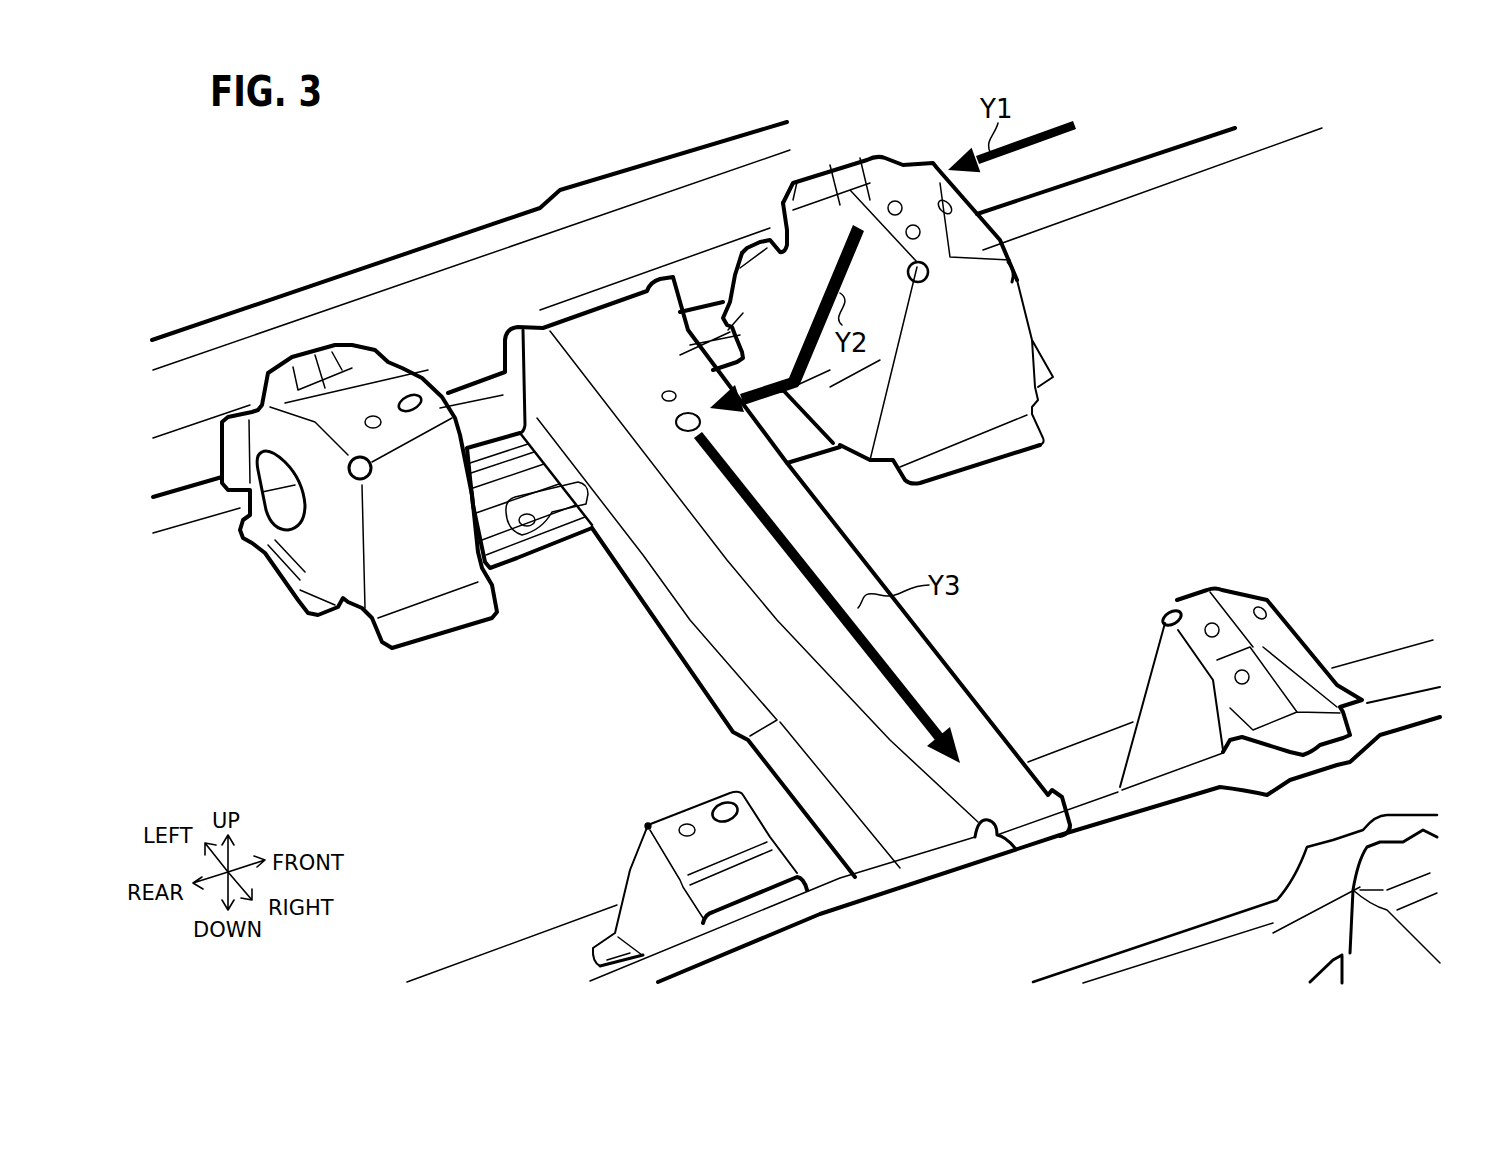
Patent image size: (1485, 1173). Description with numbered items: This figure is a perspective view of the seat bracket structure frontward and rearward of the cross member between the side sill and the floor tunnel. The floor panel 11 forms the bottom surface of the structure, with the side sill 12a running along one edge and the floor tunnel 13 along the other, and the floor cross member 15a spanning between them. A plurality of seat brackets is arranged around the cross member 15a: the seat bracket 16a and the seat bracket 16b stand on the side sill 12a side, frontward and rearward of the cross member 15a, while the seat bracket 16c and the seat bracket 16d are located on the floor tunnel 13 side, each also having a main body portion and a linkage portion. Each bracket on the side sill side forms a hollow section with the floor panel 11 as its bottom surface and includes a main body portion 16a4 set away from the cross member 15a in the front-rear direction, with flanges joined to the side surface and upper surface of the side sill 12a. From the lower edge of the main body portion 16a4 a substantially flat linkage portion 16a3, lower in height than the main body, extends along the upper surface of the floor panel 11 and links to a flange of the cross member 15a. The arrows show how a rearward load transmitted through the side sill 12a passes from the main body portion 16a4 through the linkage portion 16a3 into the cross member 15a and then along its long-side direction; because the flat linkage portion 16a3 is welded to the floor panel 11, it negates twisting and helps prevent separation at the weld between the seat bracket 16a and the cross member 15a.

The floor panel 11 is at (1193, 432).
The side sill 12a is at (598, 262).
The floor tunnel 13 is at (1097, 855).
The floor cross member 15a is at (600, 325).
The seat bracket 16a is at (977, 238).
The linkage portion 16a3 is at (752, 378).
The main body portion 16a4 is at (873, 205).
The seat bracket 16b is at (388, 410).
The seat bracket 16c is at (1197, 600).
The seat bracket 16d is at (699, 813).